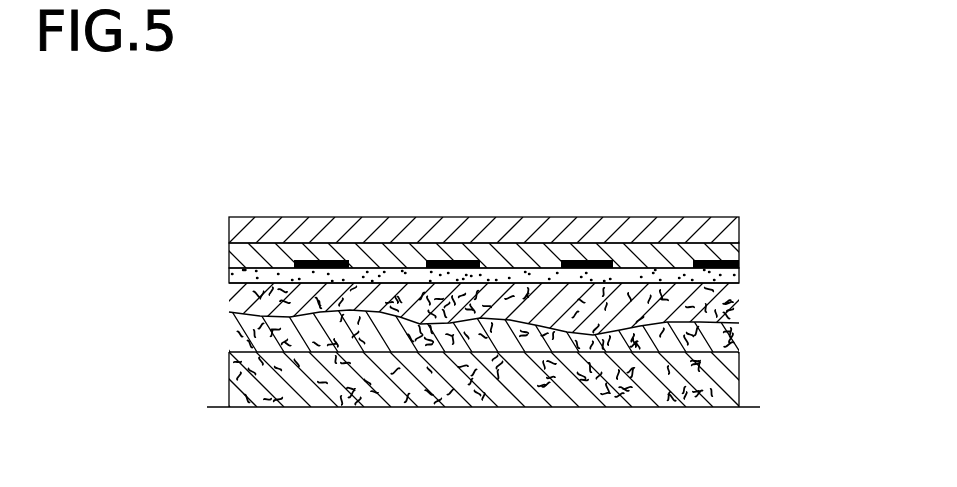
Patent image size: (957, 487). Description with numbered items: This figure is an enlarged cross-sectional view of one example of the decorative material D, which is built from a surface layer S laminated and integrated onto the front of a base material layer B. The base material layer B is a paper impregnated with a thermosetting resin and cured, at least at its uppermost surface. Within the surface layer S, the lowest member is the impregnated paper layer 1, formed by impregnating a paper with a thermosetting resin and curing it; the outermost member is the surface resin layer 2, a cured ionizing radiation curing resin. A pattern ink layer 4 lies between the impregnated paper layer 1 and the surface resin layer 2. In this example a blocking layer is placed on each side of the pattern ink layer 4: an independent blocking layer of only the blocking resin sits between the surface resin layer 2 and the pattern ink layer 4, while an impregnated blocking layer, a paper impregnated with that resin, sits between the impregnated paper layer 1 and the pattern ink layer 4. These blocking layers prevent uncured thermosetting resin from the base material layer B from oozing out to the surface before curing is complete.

The surface resin layer 2 is at (740, 220).
The pattern ink layer 4 is at (742, 258).
The impregnated paper layer 1 is at (740, 340).
The base material layer B is at (740, 382).
The decorative material D is at (364, 198).
The surface layer S is at (211, 218).